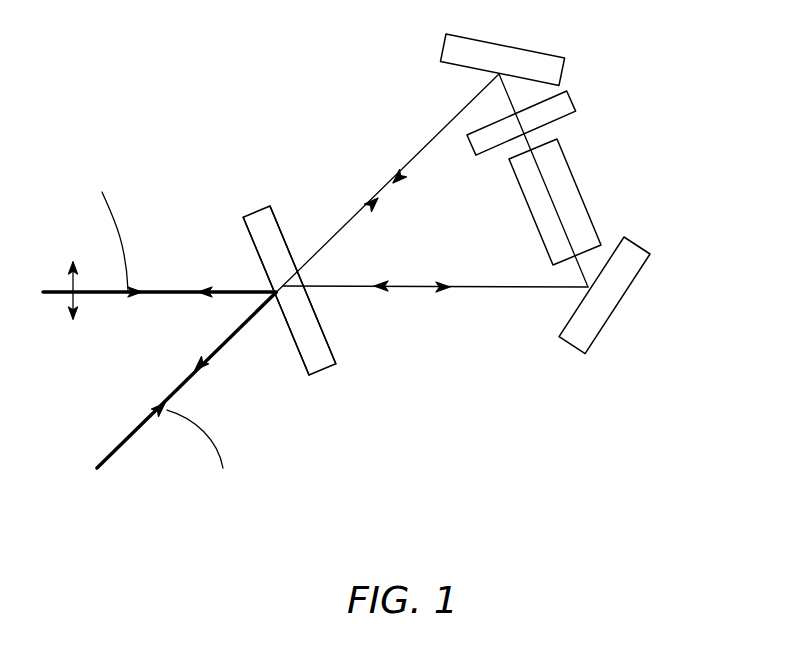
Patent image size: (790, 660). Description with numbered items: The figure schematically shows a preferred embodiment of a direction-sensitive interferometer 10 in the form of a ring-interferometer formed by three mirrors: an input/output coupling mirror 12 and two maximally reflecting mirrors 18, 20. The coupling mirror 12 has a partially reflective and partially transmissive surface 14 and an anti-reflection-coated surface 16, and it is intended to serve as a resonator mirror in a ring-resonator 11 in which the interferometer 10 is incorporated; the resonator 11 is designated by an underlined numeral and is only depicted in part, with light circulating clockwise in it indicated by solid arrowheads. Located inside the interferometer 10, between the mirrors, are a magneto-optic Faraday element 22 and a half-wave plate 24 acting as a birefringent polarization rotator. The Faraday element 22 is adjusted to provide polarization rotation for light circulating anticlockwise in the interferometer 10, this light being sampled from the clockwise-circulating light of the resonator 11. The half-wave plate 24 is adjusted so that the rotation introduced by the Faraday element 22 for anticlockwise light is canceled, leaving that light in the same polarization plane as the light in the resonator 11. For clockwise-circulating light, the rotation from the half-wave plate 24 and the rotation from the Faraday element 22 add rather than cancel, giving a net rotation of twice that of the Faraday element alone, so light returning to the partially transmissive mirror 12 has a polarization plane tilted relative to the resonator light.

The direction-sensitive interferometer 10 is at (363, 281).
The ring-resonator 11 is at (179, 279).
The input/output coupling mirror 12 is at (325, 383).
The partially reflective and partially transmissive surface 14 is at (255, 248).
The anti-reflection-coated surface 16 is at (282, 230).
The maximally reflecting mirror 18 is at (572, 313).
The maximally reflecting mirror 20 is at (460, 68).
The magneto-optic (Faraday) element 22 is at (573, 193).
The half-wave plate 24 is at (568, 105).